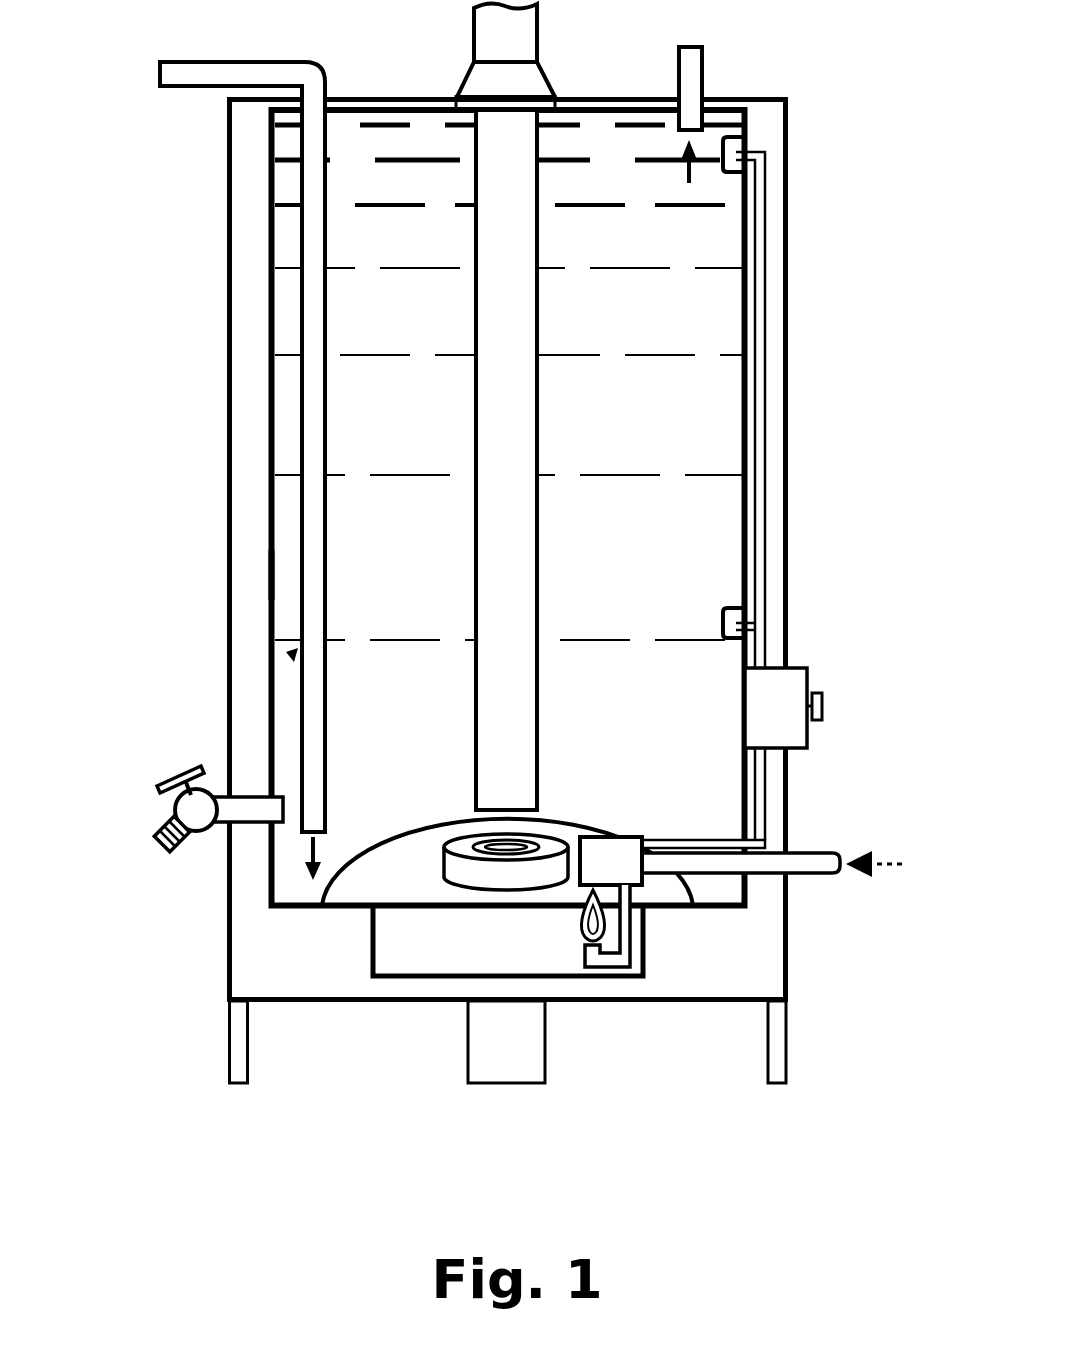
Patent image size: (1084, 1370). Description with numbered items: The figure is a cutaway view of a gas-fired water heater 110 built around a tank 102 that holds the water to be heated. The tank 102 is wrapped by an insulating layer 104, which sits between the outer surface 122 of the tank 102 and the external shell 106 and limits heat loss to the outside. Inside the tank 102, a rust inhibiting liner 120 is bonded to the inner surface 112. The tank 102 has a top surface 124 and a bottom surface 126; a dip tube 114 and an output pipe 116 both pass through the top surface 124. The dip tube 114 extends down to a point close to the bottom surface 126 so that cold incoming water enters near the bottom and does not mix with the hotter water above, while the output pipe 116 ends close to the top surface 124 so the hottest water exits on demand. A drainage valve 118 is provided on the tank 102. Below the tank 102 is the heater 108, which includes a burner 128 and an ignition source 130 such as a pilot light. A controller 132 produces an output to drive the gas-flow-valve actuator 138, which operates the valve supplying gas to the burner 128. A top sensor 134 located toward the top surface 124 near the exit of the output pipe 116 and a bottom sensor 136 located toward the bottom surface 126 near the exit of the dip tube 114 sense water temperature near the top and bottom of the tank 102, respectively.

The tank 102 is at (265, 382).
The insulating layer 104 is at (250, 242).
The external shell 106 is at (228, 566).
The heater 108 is at (398, 880).
The water heater 110 is at (822, 316).
The inner surface 112 is at (270, 575).
The dip tube 114 is at (190, 88).
The output pipe 116 is at (704, 90).
The drainage valve 118 is at (178, 800).
The rust inhibiting liner 120 is at (294, 656).
The outer surface 122 is at (265, 497).
The top surface 124 is at (580, 98).
The bottom surface 126 is at (660, 912).
The burner 128 is at (450, 866).
The ignition source 130 is at (580, 918).
The controller 132 is at (792, 690).
The top sensor 134 is at (742, 131).
The bottom sensor 136 is at (768, 616).
The gas-flow-valve actuator 138 is at (662, 843).